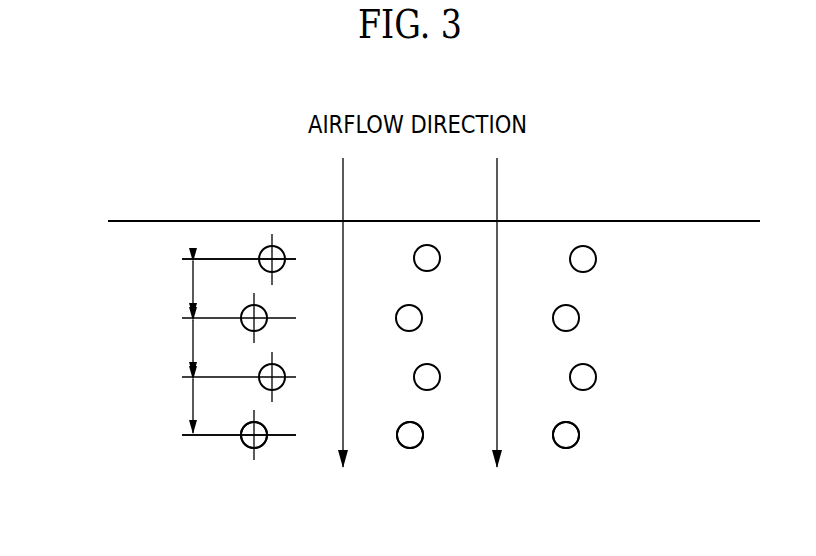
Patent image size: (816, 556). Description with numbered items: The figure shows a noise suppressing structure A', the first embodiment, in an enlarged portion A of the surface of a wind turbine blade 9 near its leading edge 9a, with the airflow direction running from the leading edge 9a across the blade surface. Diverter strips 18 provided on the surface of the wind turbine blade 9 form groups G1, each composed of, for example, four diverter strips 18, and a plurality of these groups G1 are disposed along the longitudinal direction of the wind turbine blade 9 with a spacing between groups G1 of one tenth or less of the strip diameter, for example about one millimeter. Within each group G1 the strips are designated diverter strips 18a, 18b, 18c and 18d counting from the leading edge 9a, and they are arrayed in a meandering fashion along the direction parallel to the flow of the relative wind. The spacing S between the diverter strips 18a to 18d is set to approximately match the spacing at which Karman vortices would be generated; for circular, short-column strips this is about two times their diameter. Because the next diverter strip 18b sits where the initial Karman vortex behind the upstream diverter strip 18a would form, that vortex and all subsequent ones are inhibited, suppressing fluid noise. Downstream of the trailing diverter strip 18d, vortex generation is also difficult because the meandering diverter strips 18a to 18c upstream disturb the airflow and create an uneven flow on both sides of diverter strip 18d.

The wind turbine blade 9 is at (239, 219).
The leading edge 9a is at (627, 220).
The diverter strips 18 is at (445, 328).
The diverter strip 18a is at (283, 266).
The diverter strip 18b is at (265, 325).
The diverter strip 18c is at (283, 384).
The diverter strip 18d is at (265, 442).
The portion of wind turbine blade A is at (204, 169).
The noise suppressing structure A' is at (165, 347).
The spacing S is at (232, 347).
The group G1 is at (244, 458).